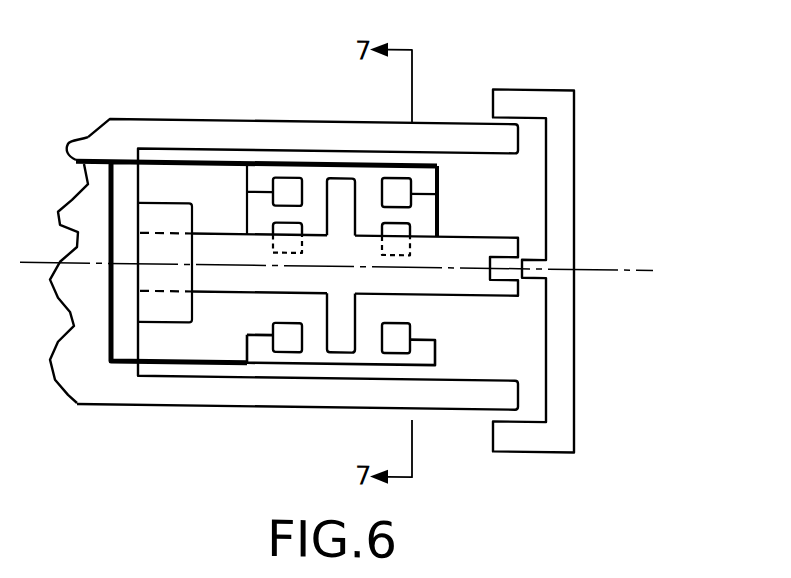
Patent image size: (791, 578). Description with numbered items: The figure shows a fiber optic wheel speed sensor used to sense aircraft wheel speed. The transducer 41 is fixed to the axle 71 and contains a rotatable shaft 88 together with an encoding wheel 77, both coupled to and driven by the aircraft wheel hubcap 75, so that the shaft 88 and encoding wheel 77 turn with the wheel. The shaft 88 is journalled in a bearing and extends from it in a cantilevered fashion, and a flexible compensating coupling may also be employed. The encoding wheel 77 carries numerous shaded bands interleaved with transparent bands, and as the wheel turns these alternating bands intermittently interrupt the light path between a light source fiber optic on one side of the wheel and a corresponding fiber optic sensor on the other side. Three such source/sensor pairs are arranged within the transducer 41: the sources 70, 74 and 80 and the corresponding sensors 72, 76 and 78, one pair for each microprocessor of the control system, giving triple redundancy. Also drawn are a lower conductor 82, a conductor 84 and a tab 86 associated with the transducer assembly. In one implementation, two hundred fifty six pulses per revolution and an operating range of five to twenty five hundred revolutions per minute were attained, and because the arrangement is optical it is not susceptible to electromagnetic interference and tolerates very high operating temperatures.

The transducer 41 is at (183, 82).
The light source fiber optic 70 is at (402, 328).
The axle 71 is at (273, 406).
The fiber optic sensor 72 is at (277, 323).
The light source fiber optic 74 is at (393, 178).
The aircraft wheel hubcap 75 is at (575, 108).
The fiber optic sensor 76 is at (283, 174).
The encoding wheel 77 is at (357, 320).
The fiber optic sensor 78 is at (277, 223).
The light source fiber optic 80 is at (400, 222).
The lower conductor strip 82 is at (437, 346).
The ground conductor 84 is at (113, 364).
The hook tab 86 is at (93, 158).
The rotatable shaft 88 is at (470, 229).